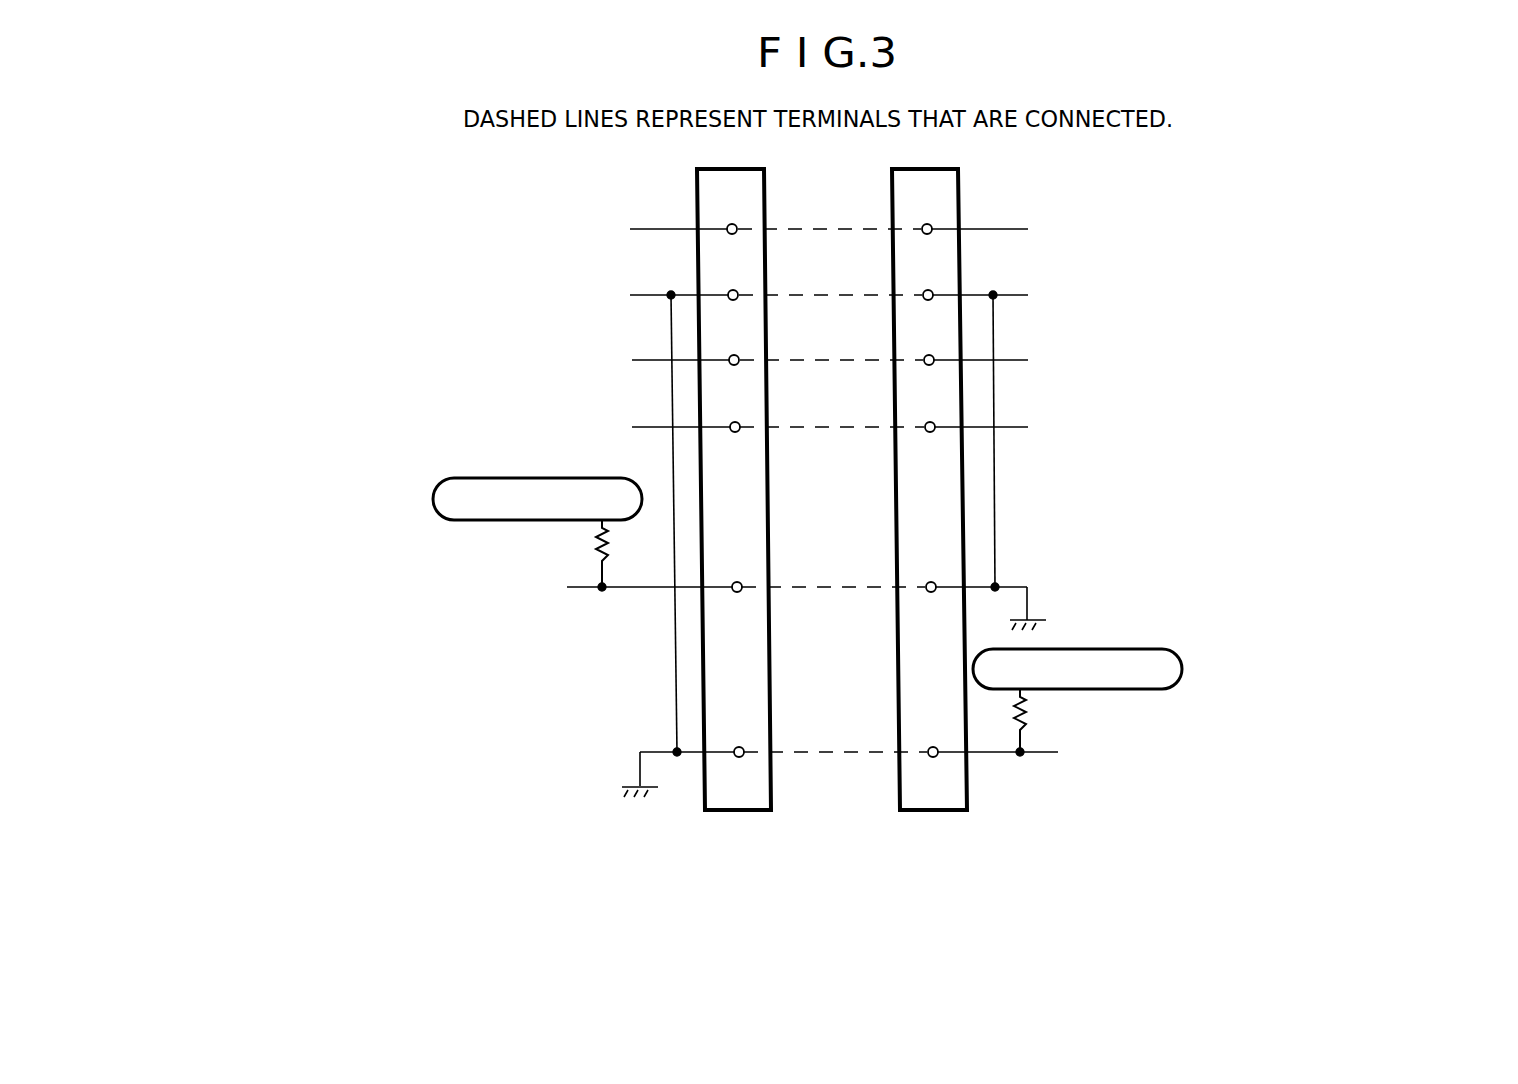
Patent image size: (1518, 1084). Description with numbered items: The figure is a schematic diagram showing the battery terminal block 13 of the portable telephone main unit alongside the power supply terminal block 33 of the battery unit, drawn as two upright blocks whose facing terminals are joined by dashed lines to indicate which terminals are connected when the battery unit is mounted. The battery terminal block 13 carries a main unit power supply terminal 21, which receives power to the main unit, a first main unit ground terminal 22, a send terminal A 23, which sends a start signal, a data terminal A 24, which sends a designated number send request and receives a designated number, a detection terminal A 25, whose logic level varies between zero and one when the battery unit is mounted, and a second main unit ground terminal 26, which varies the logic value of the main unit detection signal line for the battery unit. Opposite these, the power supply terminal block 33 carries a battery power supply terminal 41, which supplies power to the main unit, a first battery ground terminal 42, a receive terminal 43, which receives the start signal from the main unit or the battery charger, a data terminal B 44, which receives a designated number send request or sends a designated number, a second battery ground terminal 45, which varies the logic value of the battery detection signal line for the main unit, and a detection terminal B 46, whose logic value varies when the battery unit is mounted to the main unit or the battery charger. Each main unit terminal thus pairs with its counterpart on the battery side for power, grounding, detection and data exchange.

The battery terminal block 13 is at (750, 810).
The power supply terminal block 33 is at (928, 810).
The main unit power supply terminal 21 is at (449, 229).
The main unit ground terminal 1 22 is at (477, 518).
The send terminal A 23 is at (553, 360).
The data terminal A 24 is at (556, 427).
The detection terminal A 25 is at (492, 538).
The main unit ground terminal 2 26 is at (473, 771).
The battery power supply terminal 41 is at (1206, 229).
The battery ground terminal 1 42 is at (1176, 436).
The receive terminal 43 is at (1116, 360).
The data terminal B 44 is at (1109, 427).
The battery ground terminal 2 45 is at (1190, 604).
The detection terminal B 46 is at (1156, 709).